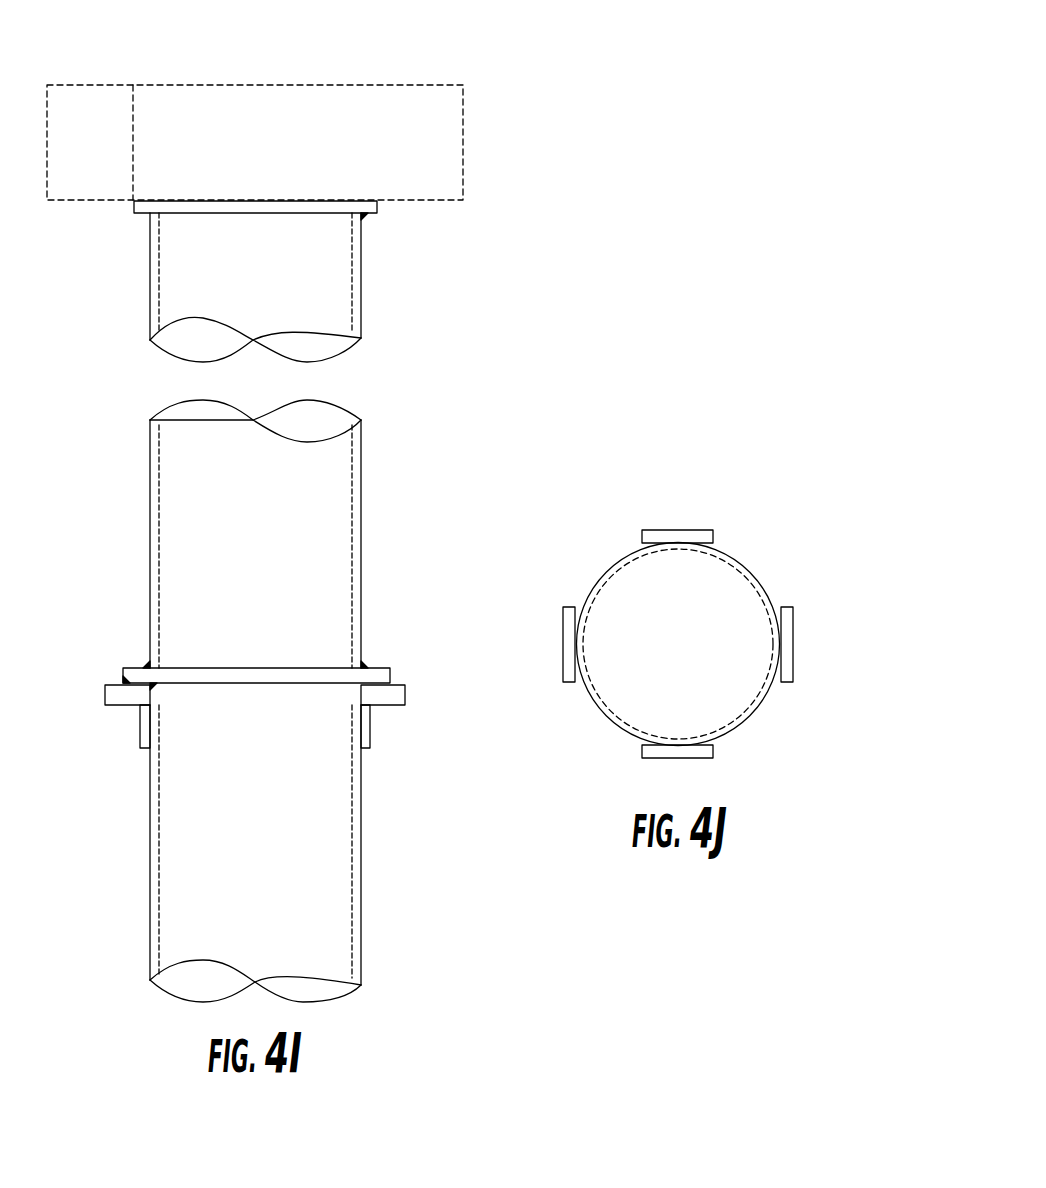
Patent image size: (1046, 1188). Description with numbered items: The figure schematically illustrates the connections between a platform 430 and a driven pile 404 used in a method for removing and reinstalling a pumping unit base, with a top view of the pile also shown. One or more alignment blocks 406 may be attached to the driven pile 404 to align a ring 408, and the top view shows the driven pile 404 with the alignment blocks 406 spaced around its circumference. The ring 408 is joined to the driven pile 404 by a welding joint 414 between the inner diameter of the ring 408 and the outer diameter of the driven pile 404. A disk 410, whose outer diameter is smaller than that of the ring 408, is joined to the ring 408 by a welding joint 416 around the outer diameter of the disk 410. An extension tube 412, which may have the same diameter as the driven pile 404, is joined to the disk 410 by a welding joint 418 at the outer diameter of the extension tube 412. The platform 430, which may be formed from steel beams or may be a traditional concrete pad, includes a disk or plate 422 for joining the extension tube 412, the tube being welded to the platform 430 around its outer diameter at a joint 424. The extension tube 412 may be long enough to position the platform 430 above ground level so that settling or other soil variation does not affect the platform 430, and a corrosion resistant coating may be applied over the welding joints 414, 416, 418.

In FIG. 4I, the driven pile 404 is at (224, 853).
In FIG. 4J, the driven pile 404 is at (748, 708).
In FIG. 4I, the alignment block 406 is at (140, 732).
In FIG. 4J, the alignment block 406 is at (652, 537).
In FIG. 4I, the ring 408 is at (110, 695).
In FIG. 4I, the disk 410 is at (135, 676).
In FIG. 4I, the extension tube 412 is at (175, 269).
In FIG. 4I, the welding joint 414 is at (151, 686).
In FIG. 4I, the welding joint 416 is at (393, 682).
In FIG. 4I, the welding joint 418 is at (366, 662).
In FIG. 4I, the plate 422 is at (233, 204).
In FIG. 4I, the weld 424 is at (363, 215).
In FIG. 4I, the platform 430 is at (468, 79).